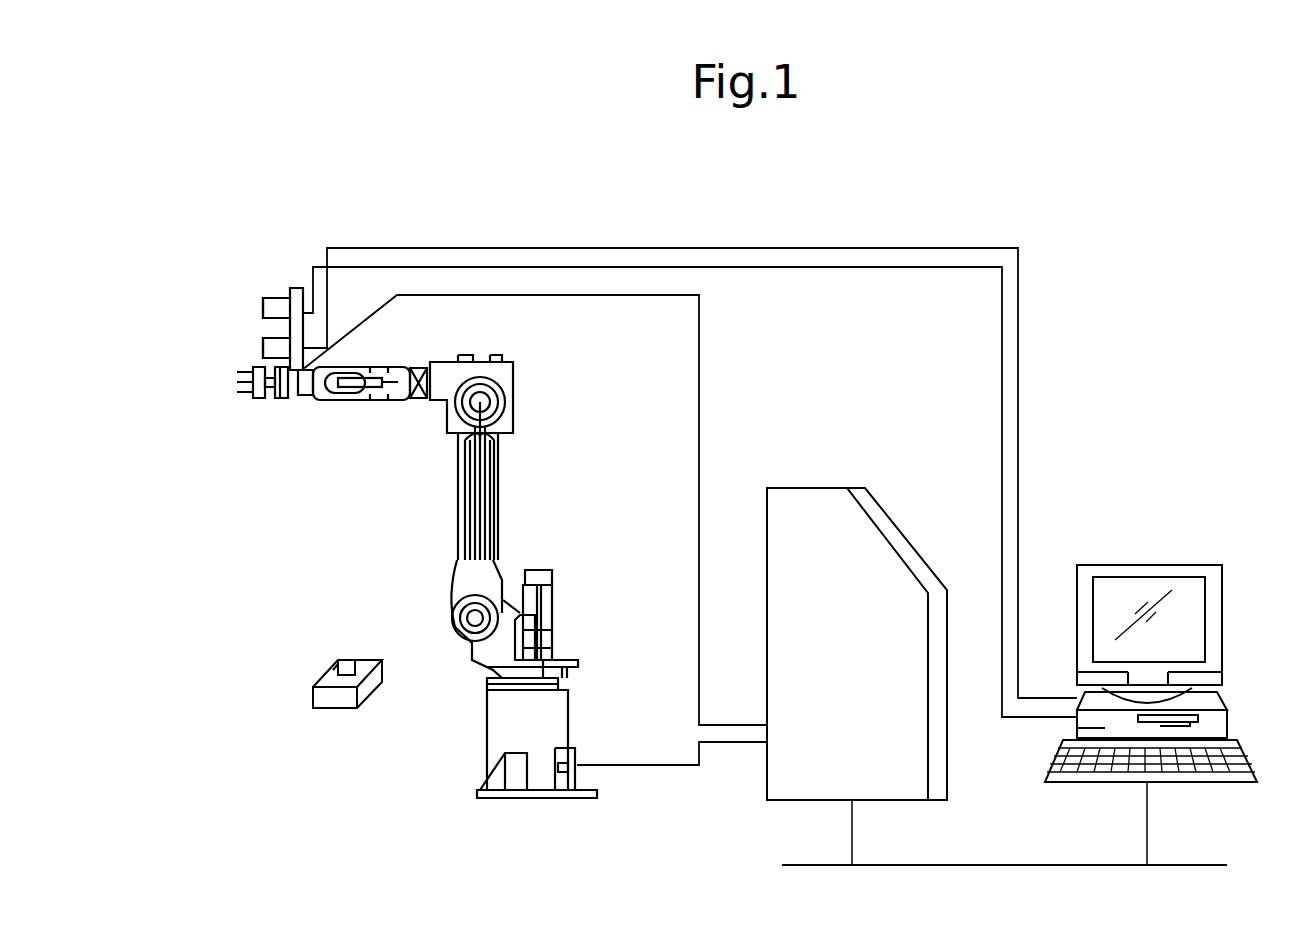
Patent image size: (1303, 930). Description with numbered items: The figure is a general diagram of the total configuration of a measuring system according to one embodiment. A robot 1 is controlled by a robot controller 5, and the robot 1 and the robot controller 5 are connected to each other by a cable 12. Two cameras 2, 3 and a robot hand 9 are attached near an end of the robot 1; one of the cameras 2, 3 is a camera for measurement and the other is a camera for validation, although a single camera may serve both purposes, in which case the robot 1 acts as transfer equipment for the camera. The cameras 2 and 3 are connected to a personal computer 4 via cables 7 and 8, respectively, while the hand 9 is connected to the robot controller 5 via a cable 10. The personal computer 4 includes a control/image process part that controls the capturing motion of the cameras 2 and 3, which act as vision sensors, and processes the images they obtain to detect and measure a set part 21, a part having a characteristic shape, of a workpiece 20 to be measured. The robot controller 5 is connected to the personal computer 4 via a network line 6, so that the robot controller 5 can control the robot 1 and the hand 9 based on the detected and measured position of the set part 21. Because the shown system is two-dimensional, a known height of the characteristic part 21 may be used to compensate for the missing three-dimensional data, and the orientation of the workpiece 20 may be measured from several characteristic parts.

The robot 1 is at (572, 585).
The camera 2 is at (263, 307).
The camera 3 is at (263, 350).
The personal computer 4 is at (1172, 565).
The robot controller 5 is at (893, 490).
The network line 6 is at (1035, 866).
The cable 7 is at (757, 248).
The cable 8 is at (857, 267).
The robot hand 9 is at (243, 400).
The cable 10 is at (700, 372).
The cable 12 is at (633, 765).
The workpiece 20 is at (301, 697).
The set part 21 is at (333, 667).